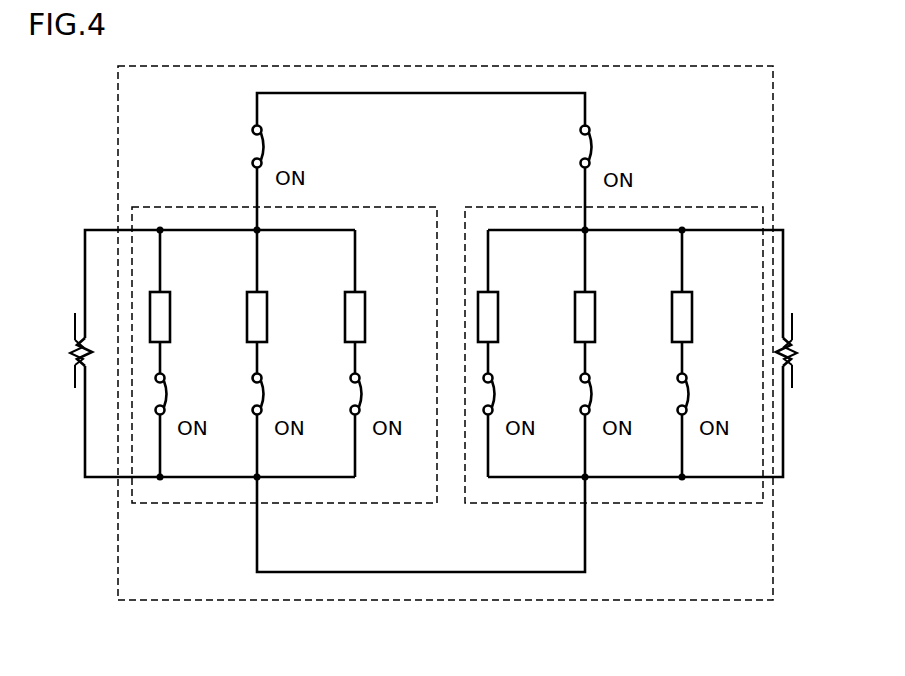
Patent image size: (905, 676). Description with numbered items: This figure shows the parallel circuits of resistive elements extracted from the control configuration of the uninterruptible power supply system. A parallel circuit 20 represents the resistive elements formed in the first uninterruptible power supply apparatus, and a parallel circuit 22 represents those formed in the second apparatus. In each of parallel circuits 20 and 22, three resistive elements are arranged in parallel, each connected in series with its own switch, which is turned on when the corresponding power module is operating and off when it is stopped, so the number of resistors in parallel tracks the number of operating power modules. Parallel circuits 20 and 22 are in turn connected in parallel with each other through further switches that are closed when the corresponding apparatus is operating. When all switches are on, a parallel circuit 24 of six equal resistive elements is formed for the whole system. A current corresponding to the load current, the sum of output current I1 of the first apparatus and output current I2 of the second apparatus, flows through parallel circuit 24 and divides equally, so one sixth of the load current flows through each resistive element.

The parallel circuit 20 is at (207, 503).
The parallel circuit 22 is at (682, 503).
The parallel circuit 24 is at (707, 600).
The output current I1 is at (53, 324).
The output current I2 is at (815, 326).